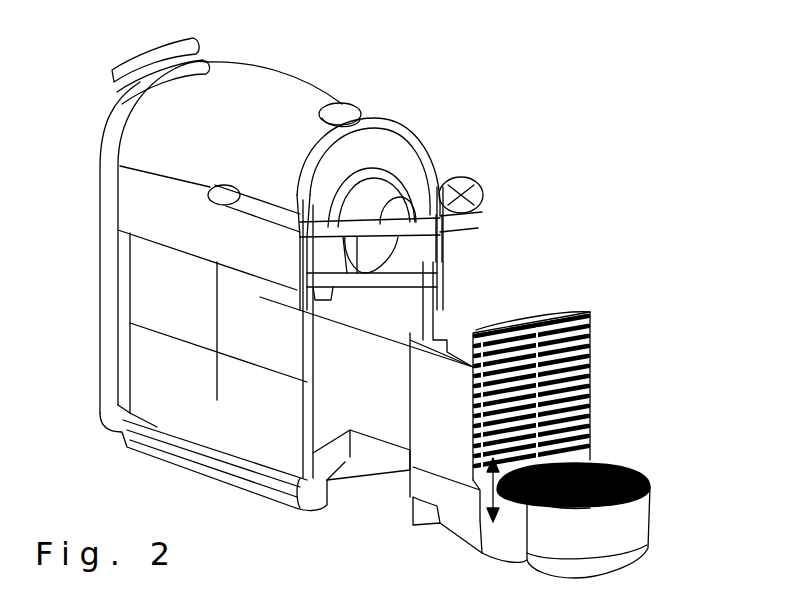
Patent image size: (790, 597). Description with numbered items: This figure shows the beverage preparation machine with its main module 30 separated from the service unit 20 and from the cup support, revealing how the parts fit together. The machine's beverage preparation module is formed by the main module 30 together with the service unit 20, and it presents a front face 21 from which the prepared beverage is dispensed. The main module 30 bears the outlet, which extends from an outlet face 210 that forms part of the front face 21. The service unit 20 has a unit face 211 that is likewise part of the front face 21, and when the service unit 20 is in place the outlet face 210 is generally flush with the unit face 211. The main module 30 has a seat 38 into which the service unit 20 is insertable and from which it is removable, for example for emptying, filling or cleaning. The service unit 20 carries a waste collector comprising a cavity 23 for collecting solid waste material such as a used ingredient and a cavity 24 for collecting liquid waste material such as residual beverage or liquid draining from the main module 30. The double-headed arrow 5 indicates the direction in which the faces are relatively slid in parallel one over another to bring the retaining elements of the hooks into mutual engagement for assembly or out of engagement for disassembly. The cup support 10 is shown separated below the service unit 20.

The main module 30 is at (385, 82).
The front face 21 is at (390, 162).
The outlet face 210 is at (427, 183).
The unit face 211 is at (553, 330).
The service unit 20 is at (627, 370).
The seat 38 is at (390, 315).
The cavity for collecting solid waste material 23 is at (427, 398).
The cavity for collecting liquid waste material 24 is at (435, 527).
The arrow 5 is at (490, 490).
The drip tray 10 is at (670, 492).